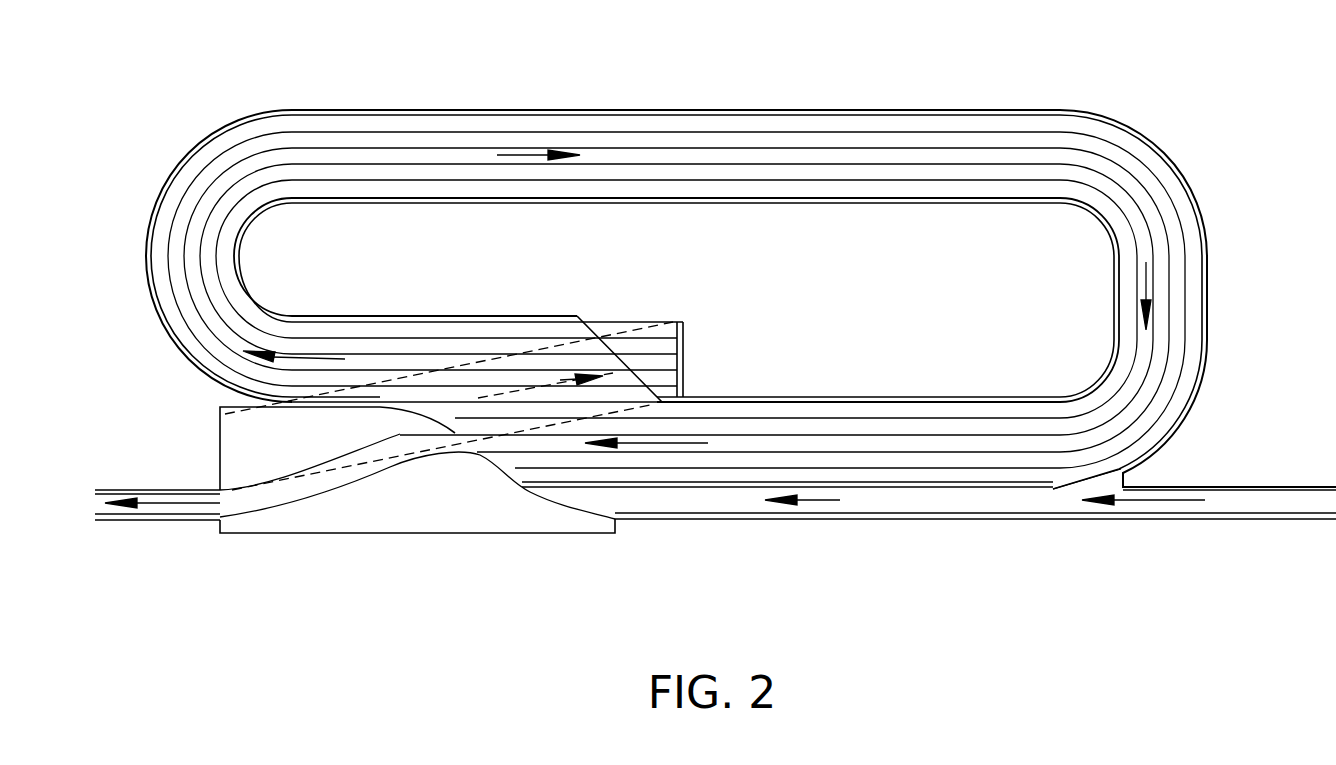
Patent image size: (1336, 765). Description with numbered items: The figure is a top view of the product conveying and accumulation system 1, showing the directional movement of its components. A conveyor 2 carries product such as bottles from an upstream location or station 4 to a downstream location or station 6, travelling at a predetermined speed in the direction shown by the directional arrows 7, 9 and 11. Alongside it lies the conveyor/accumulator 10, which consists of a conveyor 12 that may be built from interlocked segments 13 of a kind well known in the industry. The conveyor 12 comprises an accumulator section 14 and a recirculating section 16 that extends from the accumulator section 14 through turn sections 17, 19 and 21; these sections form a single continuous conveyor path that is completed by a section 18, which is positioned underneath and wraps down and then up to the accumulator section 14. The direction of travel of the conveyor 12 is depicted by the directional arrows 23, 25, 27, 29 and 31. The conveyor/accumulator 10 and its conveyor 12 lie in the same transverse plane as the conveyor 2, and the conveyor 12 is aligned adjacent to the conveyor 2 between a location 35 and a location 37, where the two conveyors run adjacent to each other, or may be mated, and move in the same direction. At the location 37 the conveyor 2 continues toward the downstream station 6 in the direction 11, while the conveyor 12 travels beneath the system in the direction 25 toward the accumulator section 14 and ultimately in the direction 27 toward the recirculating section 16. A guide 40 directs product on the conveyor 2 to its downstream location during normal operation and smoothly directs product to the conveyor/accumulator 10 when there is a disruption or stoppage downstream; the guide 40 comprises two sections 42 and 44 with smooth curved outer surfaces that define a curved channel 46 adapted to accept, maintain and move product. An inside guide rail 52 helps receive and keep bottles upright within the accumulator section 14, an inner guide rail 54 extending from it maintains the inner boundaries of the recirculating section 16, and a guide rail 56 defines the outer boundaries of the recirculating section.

The product conveying and accumulation system 1 is at (1100, 92).
The conveyor 2 is at (990, 497).
The upstream location or station 4 is at (1229, 498).
The downstream location or station 6 is at (143, 505).
The directional arrow 7 is at (1178, 505).
The directional arrow 9 is at (865, 515).
The conveyor/accumulator 10 is at (605, 98).
The directional arrow 11 is at (185, 510).
The conveyor 12 is at (990, 427).
The interlocked segments 13 is at (1110, 395).
The accumulator section 14 is at (598, 328).
The recirculating section 16 is at (355, 322).
The turn section 17 is at (147, 248).
The section 18 is at (305, 398).
The turn section 19 is at (1173, 153).
The turn section 21 is at (1190, 413).
The directional arrow 23 is at (680, 442).
The directional arrow 25 is at (505, 393).
The directional arrow 27 is at (297, 355).
The directional arrow 29 is at (528, 152).
The directional arrow 31 is at (1147, 292).
The location 35 is at (1058, 487).
The location 37 is at (222, 483).
The guide 40 is at (478, 520).
The section 42 is at (412, 517).
The section 44 is at (258, 450).
The channel 46 is at (310, 480).
The inside guide rail 52 is at (655, 363).
The inner guide rail 54 is at (438, 320).
The guide rail 56 is at (210, 138).